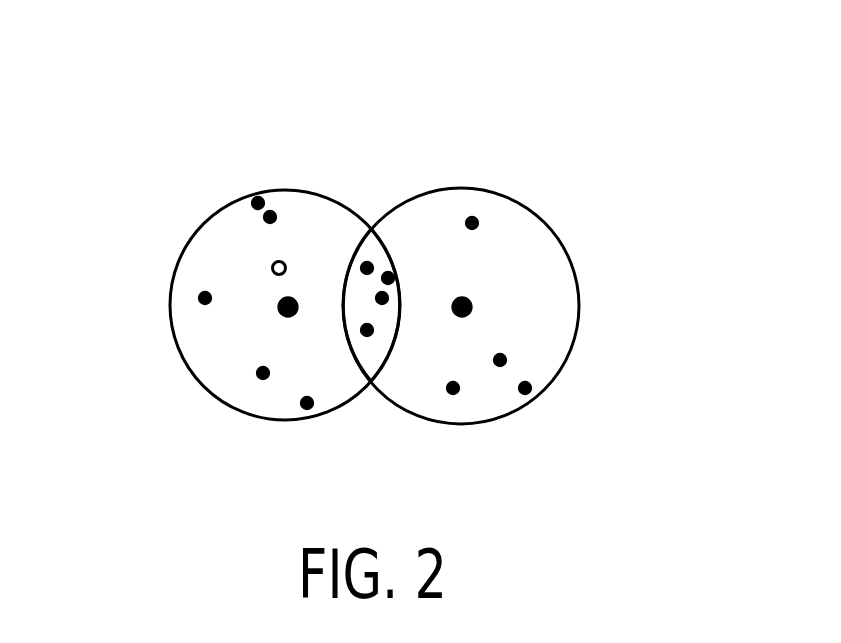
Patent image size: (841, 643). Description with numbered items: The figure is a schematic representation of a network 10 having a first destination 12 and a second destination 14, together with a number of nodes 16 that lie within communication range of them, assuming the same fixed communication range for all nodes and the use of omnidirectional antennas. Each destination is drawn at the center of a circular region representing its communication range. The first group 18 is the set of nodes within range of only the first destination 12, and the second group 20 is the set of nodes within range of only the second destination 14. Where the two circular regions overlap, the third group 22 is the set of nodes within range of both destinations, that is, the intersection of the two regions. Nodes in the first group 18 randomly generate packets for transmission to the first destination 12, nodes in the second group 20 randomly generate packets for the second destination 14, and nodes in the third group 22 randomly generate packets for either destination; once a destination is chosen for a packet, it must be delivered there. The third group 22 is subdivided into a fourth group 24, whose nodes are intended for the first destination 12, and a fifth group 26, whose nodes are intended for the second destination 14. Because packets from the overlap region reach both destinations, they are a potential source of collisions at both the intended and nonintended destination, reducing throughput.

The network 10 is at (146, 100).
The first destination 12 is at (284, 312).
The second destination 14 is at (468, 312).
The nodes 16 is at (258, 200).
The first group 18 is at (197, 268).
The second group 20 is at (553, 268).
The third group 22 is at (373, 247).
The fourth group 24 is at (365, 267).
The fifth group 26 is at (390, 277).